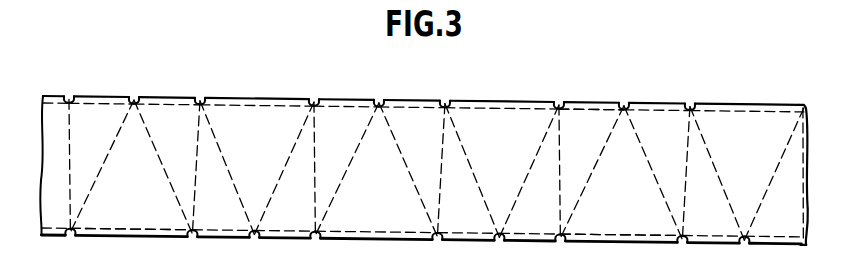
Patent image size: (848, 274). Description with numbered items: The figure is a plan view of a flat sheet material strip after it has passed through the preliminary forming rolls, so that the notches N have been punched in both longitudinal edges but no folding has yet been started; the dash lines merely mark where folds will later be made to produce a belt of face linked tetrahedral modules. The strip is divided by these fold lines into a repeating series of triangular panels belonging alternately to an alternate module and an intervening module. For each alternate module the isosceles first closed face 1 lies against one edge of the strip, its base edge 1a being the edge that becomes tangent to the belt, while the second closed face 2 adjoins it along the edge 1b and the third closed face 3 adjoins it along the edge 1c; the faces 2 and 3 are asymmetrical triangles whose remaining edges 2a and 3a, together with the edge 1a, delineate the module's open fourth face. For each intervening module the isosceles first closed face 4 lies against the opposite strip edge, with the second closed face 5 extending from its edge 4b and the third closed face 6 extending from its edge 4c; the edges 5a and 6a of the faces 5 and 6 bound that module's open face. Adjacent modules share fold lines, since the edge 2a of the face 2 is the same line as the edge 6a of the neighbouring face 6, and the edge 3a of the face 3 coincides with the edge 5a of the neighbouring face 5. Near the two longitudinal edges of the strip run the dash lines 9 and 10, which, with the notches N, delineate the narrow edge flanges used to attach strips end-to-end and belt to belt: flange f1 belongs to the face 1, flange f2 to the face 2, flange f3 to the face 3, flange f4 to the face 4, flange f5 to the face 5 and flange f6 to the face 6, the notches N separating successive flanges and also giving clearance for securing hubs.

The first closed face 1 is at (143, 222).
The base edge of first closed face 1a is at (107, 240).
The edge of first closed face 1b is at (410, 178).
The third edge of first closed face 1c is at (328, 212).
The second closed face 2 is at (182, 118).
The edge of second closed face 2a is at (441, 166).
The third closed face 3 is at (80, 117).
The edge of third closed face 3a is at (316, 140).
The first closed face 4 is at (227, 123).
The edge of first closed face 4b is at (296, 141).
The remaining edge of first closed face 4c is at (218, 151).
The second closed face 5 is at (305, 222).
The edge of second closed face 5a is at (315, 200).
The third closed face 6 is at (230, 225).
The edge of third closed face 6a is at (195, 213).
The dash line 9 is at (583, 107).
The dash line 10 is at (57, 225).
The notch N is at (558, 104).
The flange f1 is at (660, 240).
The flange f2 is at (404, 102).
The flange f3 is at (113, 96).
The flange f4 is at (752, 75).
The flange f5 is at (792, 242).
The flange f6 is at (694, 258).